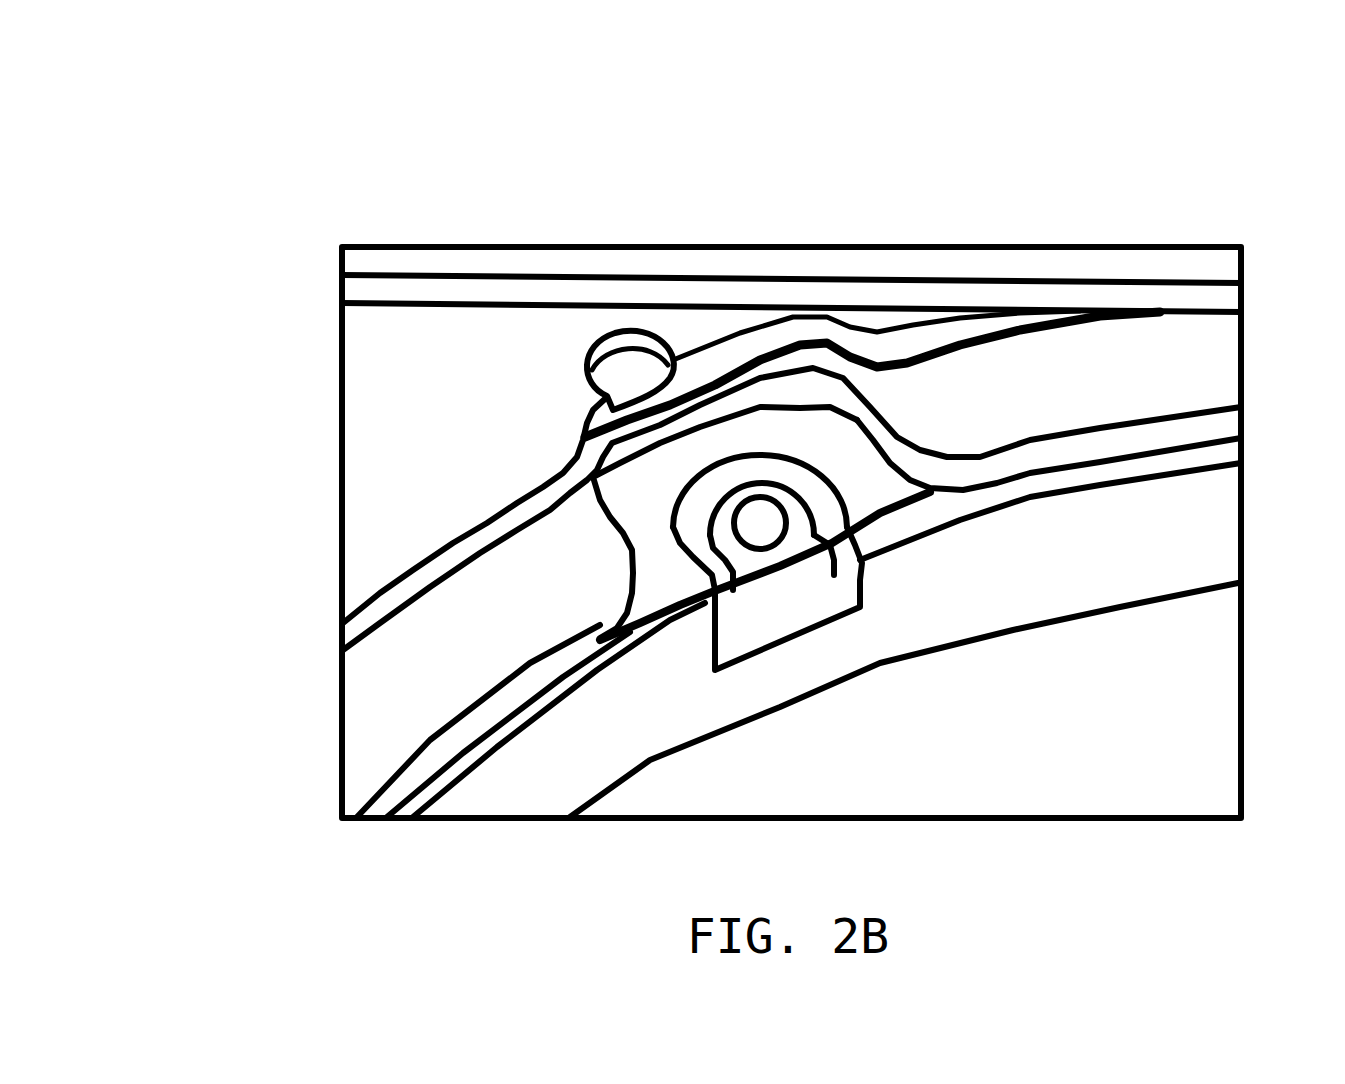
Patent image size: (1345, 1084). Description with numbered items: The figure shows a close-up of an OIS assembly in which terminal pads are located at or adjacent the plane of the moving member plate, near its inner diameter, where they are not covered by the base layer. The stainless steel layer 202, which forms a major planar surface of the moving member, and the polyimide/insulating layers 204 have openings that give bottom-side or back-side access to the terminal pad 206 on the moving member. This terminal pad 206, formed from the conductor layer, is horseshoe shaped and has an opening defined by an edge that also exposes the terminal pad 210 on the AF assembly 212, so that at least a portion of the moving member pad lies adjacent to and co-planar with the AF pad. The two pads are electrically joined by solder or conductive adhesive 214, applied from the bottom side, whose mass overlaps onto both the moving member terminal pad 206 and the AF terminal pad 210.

The stainless steel layer 202 is at (465, 350).
The polyimide/insulating layers 204 is at (645, 503).
The terminal pad 206 is at (707, 532).
The terminal pad 210 is at (779, 562).
The AF assembly 212 is at (627, 727).
The solder or conductive adhesive 214 is at (760, 522).